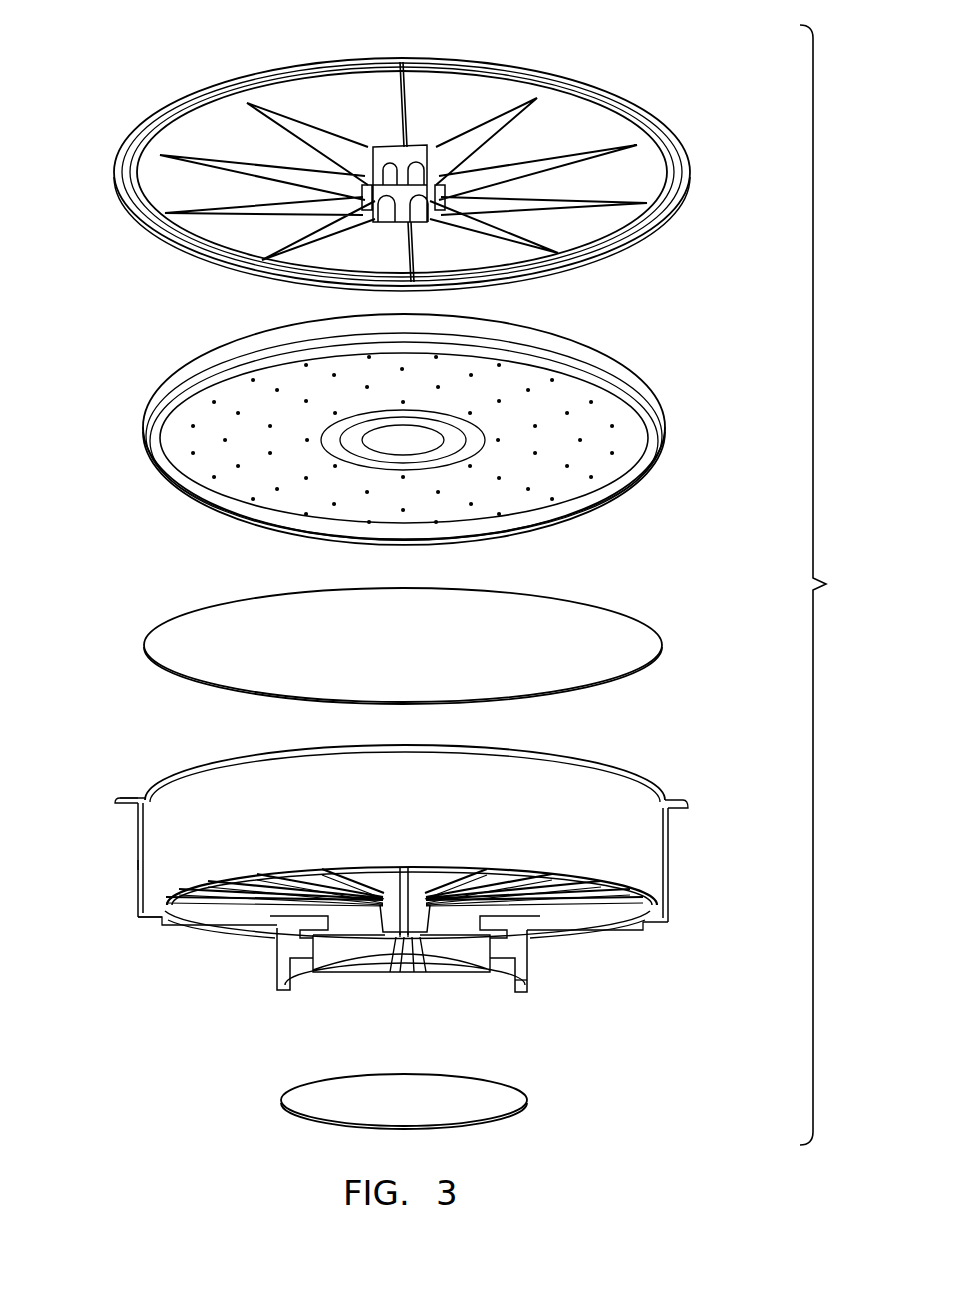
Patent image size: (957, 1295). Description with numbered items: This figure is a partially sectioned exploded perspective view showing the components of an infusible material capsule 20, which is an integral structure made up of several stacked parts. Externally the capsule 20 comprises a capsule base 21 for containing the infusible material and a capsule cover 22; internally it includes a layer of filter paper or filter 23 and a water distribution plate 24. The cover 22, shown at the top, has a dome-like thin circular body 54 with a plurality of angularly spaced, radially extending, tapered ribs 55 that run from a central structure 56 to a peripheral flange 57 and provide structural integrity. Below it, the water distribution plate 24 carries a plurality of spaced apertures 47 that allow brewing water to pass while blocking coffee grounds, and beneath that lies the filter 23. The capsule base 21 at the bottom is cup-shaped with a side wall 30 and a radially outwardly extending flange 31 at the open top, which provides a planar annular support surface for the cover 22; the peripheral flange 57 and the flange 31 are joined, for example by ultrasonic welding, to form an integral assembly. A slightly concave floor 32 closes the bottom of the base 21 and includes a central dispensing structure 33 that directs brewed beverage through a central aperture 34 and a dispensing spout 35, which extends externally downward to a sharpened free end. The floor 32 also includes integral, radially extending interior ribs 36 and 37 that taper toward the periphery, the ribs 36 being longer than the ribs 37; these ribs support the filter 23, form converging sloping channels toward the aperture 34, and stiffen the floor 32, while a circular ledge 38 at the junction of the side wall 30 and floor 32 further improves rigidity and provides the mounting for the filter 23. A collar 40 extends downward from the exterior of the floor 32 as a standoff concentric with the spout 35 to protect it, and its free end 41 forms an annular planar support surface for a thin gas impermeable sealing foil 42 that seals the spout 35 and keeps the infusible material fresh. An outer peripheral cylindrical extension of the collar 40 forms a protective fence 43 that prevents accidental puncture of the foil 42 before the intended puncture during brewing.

The infusible material capsule 20 is at (833, 585).
The capsule base 21 is at (421, 837).
The capsule cover 22 is at (447, 151).
The filter 23 is at (670, 604).
The water distribution plate 24 is at (438, 426).
The side wall 30 is at (137, 847).
The flange 31 is at (130, 805).
The floor 32 is at (232, 928).
The central dispensing structure 33 is at (270, 1000).
The central aperture 34 is at (404, 962).
The dispensing spout 35 is at (393, 960).
The interior ribs 36 is at (528, 897).
The interior ribs 37 is at (617, 887).
The circular ledge 38 is at (157, 908).
The collar 40 is at (518, 960).
The free end 41 is at (505, 975).
The sealing foil 42 is at (500, 1098).
The fence 43 is at (525, 982).
The apertures 47 is at (252, 474).
The circular body 54 is at (556, 121).
The ribs 55 is at (486, 124).
The central structure 56 is at (412, 146).
The peripheral flange 57 is at (676, 178).